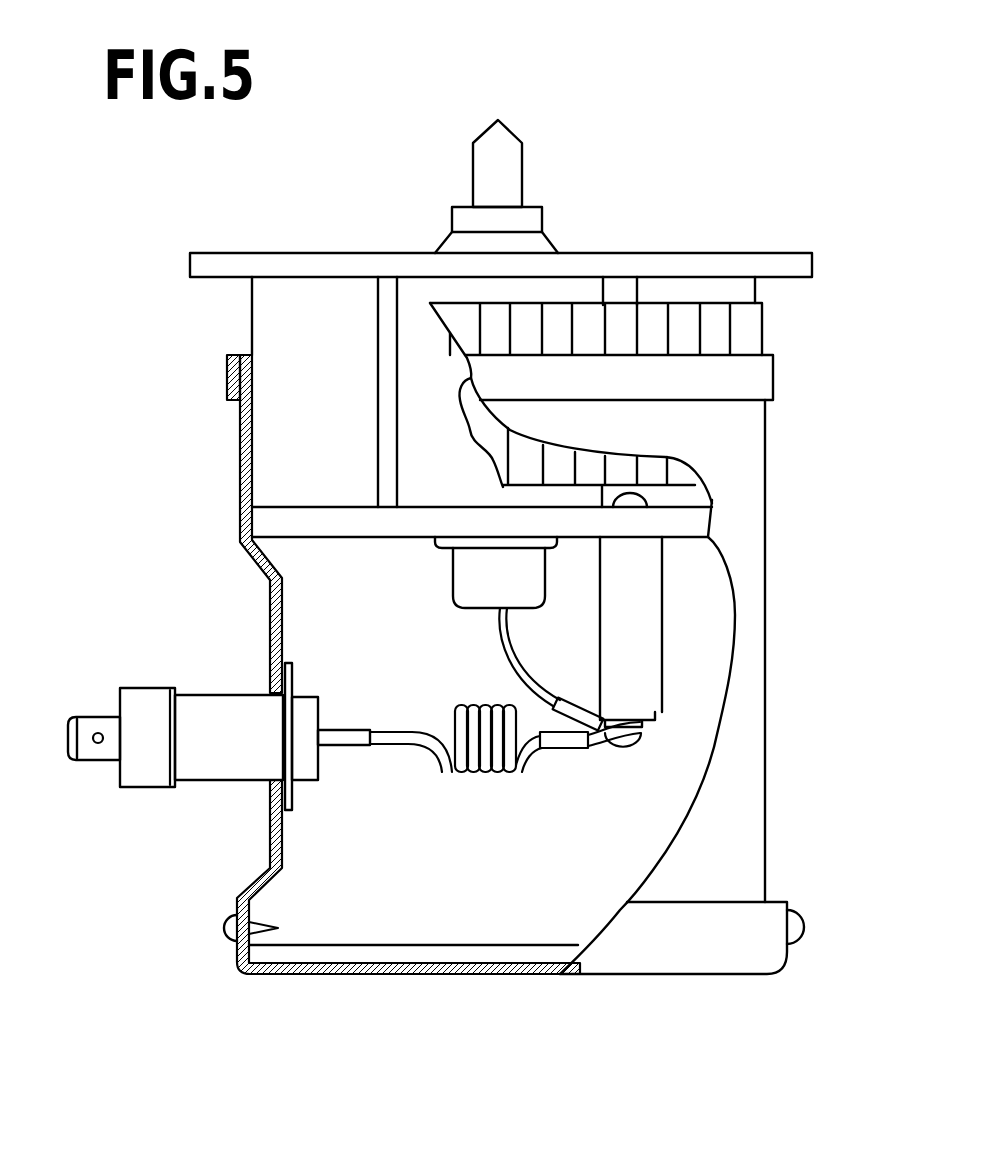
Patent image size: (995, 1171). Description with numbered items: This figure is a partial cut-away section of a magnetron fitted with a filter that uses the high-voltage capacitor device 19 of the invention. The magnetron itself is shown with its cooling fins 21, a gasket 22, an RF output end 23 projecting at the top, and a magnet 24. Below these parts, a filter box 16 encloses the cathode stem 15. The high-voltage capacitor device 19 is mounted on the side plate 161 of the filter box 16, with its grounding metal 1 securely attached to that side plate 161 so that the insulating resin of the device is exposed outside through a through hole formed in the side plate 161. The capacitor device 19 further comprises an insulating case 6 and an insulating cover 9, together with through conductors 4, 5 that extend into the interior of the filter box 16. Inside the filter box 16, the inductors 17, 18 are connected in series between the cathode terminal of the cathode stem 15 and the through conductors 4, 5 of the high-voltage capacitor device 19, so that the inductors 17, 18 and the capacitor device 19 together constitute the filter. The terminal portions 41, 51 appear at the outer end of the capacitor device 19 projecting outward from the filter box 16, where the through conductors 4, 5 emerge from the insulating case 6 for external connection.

The grounding metal 1 is at (312, 708).
The through conductor 4 is at (385, 799).
The through conductor 5 is at (342, 752).
The insulating case 6 is at (197, 767).
The insulating cover 9 is at (300, 706).
The cathode stem 15 is at (468, 573).
The filter box 16 is at (765, 753).
The side plate 161 is at (272, 648).
The inductor 17 is at (544, 793).
The inductor 18 is at (466, 776).
The high-voltage capacitor device 19 is at (238, 721).
The cooling fins 21 is at (467, 430).
The gasket 22 is at (683, 263).
The RF output end 23 is at (498, 177).
The magnet 24 is at (405, 377).
The terminal 41 is at (72, 806).
The terminal 51 is at (78, 763).